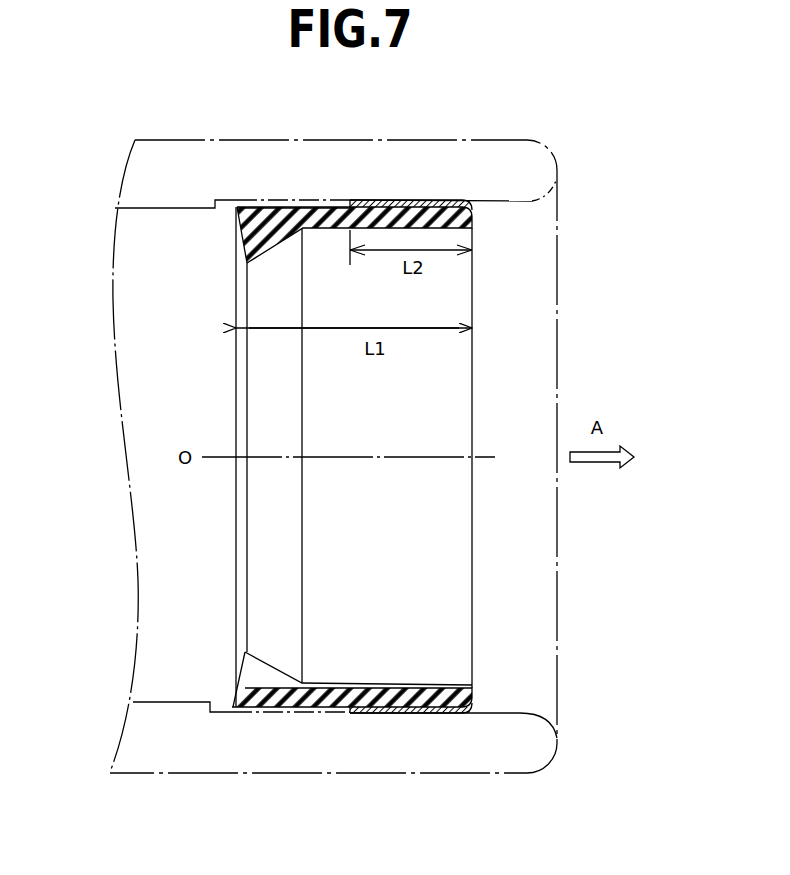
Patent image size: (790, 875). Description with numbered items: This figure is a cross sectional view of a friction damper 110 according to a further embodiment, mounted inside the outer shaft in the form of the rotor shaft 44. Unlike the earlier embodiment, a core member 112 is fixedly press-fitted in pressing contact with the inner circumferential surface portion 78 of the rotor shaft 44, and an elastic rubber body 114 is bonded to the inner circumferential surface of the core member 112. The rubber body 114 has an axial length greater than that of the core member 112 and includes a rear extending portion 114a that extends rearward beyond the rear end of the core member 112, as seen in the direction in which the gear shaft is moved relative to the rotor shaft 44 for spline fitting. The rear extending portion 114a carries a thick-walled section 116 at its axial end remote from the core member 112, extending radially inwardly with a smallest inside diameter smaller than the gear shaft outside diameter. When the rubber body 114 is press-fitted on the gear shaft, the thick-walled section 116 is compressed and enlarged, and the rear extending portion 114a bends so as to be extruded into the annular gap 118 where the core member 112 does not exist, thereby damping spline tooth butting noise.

The friction damper 110 is at (471, 183).
The core member 112 is at (409, 200).
The rubber body 114 is at (243, 275).
The rear extending portion 114a is at (238, 192).
The thick-walled section 116 is at (252, 237).
The annular gap 118 is at (298, 712).
The inner circumferential surface portion 78 is at (497, 712).
The rotor shaft 44 is at (476, 792).